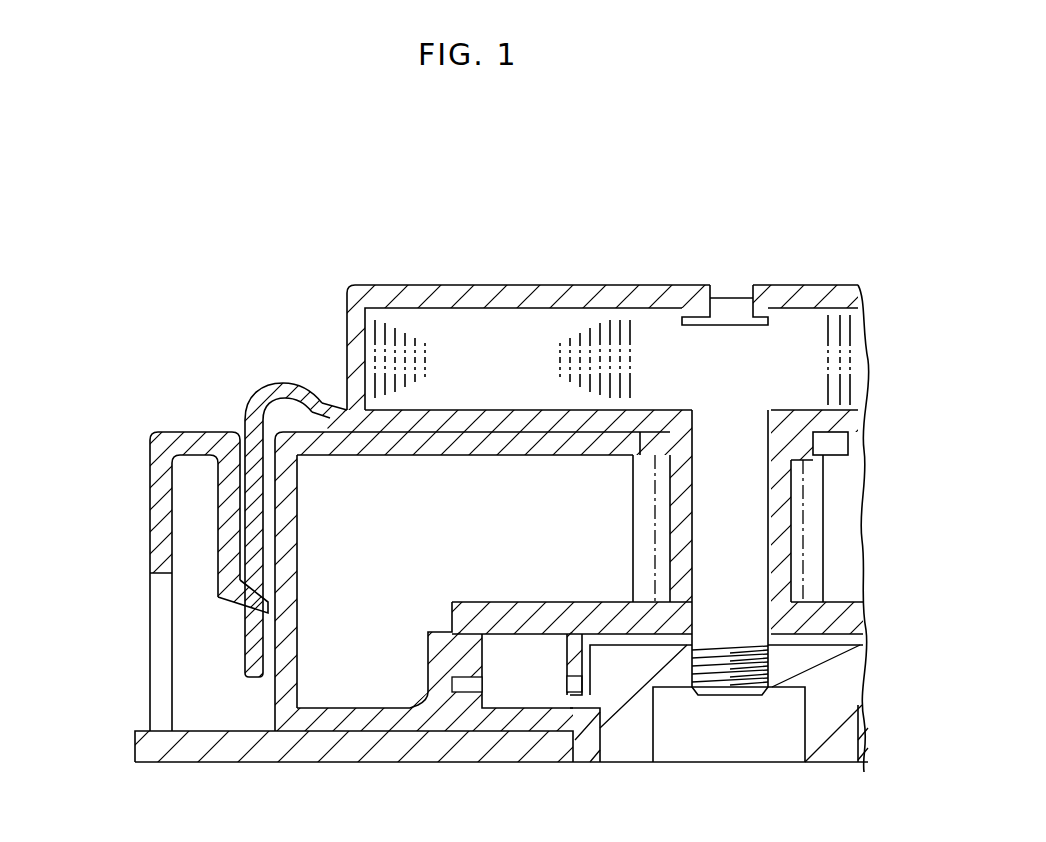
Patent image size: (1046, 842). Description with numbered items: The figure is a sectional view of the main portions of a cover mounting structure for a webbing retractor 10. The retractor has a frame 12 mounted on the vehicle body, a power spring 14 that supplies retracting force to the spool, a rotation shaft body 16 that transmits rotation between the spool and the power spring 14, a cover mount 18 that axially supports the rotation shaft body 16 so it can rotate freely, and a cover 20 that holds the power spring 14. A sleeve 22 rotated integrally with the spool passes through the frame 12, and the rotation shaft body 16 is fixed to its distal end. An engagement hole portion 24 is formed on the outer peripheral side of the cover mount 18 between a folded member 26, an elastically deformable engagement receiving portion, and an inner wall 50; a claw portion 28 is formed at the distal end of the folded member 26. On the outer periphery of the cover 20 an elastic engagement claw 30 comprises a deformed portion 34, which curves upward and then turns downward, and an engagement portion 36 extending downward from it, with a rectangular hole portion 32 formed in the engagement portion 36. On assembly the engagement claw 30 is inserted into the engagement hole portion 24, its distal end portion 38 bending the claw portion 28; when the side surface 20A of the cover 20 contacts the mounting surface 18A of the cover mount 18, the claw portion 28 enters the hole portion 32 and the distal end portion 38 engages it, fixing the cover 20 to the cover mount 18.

The webbing retractor 10 is at (286, 222).
The frame 12 is at (440, 755).
The power spring 14 is at (572, 332).
The rotation shaft body 16 is at (735, 318).
The cover mount 18 is at (146, 460).
The mounting surface 18A is at (466, 427).
The cover 20 is at (458, 282).
The side surface 20A is at (346, 362).
The sleeve 22 is at (625, 745).
The engagement hole portion 24 is at (250, 425).
The folded member 26 is at (210, 528).
The claw portion 28 is at (240, 602).
The engagement claw 30 is at (258, 392).
The hole portion 32 is at (258, 537).
The deformed portion 34 is at (294, 396).
The engagement portion 36 is at (258, 476).
The distal end portion 38 is at (263, 653).
The inner wall 50 is at (292, 506).